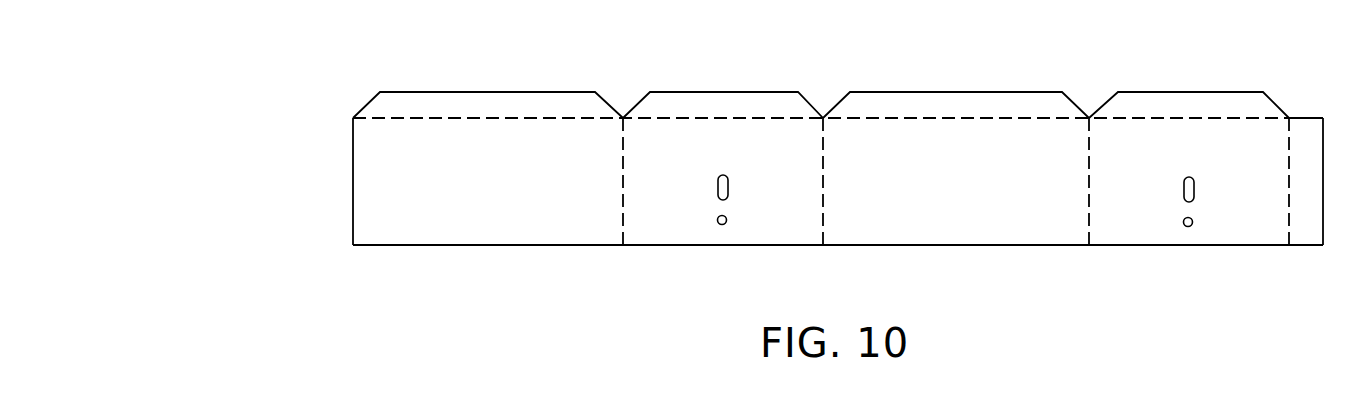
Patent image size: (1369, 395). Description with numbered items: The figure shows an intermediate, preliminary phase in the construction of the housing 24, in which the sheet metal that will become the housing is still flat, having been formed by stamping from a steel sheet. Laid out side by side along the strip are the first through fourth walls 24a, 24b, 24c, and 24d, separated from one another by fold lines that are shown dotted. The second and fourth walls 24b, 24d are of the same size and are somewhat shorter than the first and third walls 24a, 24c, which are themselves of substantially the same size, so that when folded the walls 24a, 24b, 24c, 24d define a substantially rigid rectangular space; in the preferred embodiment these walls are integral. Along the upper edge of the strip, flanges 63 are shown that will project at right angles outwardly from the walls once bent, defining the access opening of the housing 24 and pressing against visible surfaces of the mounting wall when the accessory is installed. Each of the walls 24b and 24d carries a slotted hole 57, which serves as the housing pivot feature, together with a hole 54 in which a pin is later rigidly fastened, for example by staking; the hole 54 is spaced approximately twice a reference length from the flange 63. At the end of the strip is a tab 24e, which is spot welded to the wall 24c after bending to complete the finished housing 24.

The housing 24 is at (397, 284).
The first wall 24a is at (895, 234).
The second wall 24b is at (653, 234).
The third wall 24c is at (378, 173).
The fourth wall 24d is at (1117, 235).
The tab 24e is at (1308, 135).
The hole 54 is at (723, 225).
The slotted hole 57 is at (728, 198).
The flange 63 is at (944, 93).